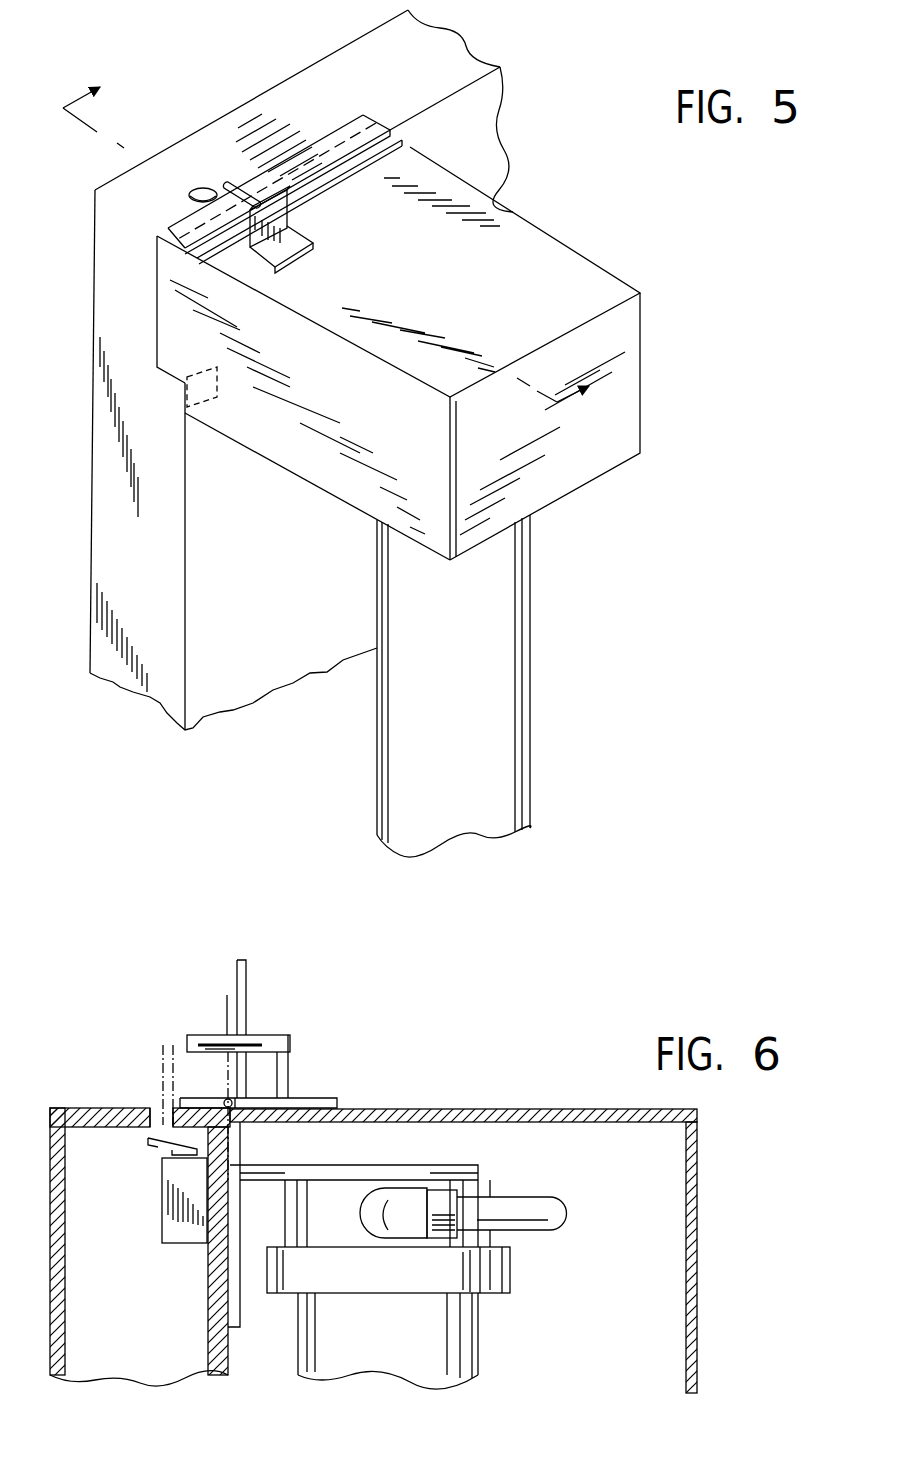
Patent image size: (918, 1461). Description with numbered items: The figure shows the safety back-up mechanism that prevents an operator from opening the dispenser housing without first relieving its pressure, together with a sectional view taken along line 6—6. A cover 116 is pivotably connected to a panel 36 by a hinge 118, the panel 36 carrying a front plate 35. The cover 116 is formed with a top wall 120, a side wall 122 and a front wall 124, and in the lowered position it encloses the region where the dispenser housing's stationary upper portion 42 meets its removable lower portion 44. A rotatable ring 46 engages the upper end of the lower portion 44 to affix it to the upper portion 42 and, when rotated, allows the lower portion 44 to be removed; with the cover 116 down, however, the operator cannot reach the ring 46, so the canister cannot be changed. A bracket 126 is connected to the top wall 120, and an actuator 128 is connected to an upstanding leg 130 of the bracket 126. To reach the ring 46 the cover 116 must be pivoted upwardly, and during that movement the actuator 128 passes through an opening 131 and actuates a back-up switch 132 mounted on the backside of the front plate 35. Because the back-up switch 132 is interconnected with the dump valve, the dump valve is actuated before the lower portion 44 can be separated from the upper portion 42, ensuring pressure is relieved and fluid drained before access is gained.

In FIG. 5, the section line 6— 6 is at (339, 231).
In FIG. 5, the front plate 35 is at (492, 115).
In FIG. 6, the front plate 35 is at (230, 1353).
In FIG. 5, the panel 36 is at (468, 31).
In FIG. 6, the upper portion 42 is at (487, 1172).
In FIG. 5, the lower portion 44 is at (530, 657).
In FIG. 6, the lower portion 44 is at (482, 1353).
In FIG. 6, the rotatable ring 46 is at (513, 1277).
In FIG. 5, the cover 116 is at (542, 216).
In FIG. 5, the hinge 118 is at (332, 126).
In FIG. 5, the top wall 120 is at (499, 296).
In FIG. 6, the top wall 120 is at (436, 1108).
In FIG. 5, the side wall 122 is at (404, 420).
In FIG. 5, the front wall 124 is at (515, 454).
In FIG. 6, the front wall 124 is at (698, 1288).
In FIG. 5, the bracket 126 is at (322, 233).
In FIG. 6, the bracket 126 is at (287, 1055).
In FIG. 5, the actuator 128 is at (228, 182).
In FIG. 6, the actuator 128 is at (204, 1033).
In FIG. 5, the upstanding leg 130 is at (293, 199).
In FIG. 6, the upstanding leg 130 is at (293, 1052).
In FIG. 6, the opening 131 is at (148, 1115).
In FIG. 6, the back-up switch 132 is at (148, 1216).